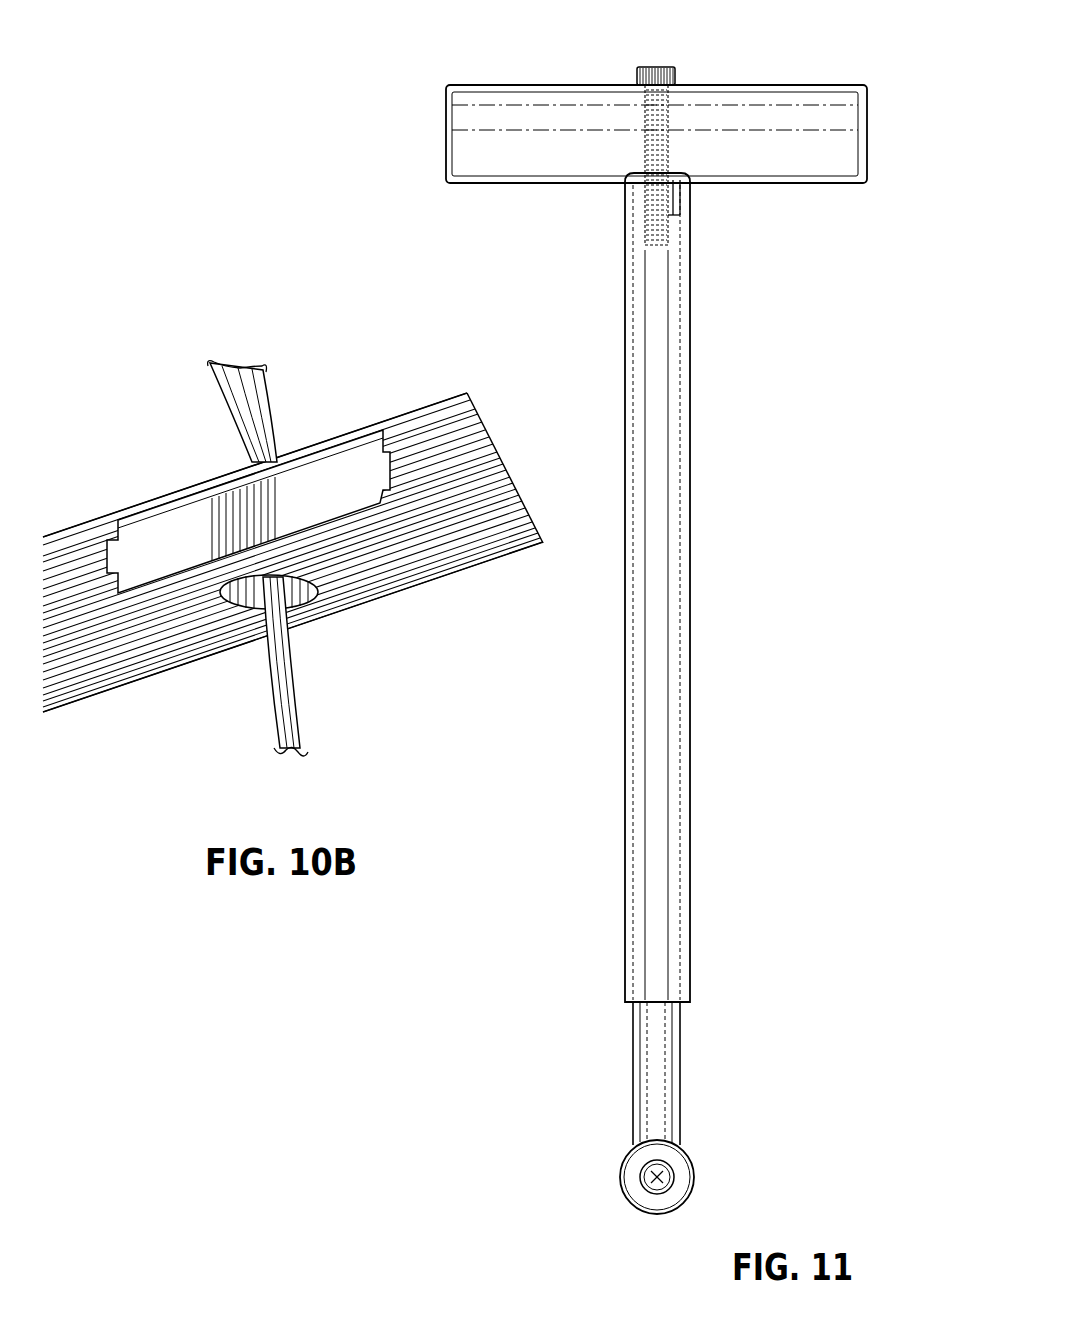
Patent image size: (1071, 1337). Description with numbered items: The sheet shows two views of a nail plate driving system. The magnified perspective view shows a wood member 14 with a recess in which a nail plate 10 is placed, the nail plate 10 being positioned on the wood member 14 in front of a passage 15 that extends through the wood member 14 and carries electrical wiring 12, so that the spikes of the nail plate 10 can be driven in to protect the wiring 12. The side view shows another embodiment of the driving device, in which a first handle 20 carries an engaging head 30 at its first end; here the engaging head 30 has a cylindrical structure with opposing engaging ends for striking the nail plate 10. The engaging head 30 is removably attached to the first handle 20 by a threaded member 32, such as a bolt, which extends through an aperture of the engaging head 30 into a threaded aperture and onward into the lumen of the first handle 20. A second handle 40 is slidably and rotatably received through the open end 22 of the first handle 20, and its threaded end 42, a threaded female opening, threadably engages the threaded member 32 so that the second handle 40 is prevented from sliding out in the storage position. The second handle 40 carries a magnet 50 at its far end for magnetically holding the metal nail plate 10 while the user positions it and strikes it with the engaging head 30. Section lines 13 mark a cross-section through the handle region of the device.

In FIG. 10B, the nail plate 10 is at (167, 518).
In FIG. 10B, the electrical wiring 12 is at (270, 403).
In FIG. 11, the electrical wiring 12 is at (622, 43).
In FIG. 11, the section line 13- 13 is at (612, 275).
In FIG. 10B, the wood member 14 is at (420, 583).
In FIG. 10B, the passage 15 is at (307, 600).
In FIG. 11, the first handle 20 is at (690, 557).
In FIG. 11, the open end 22 is at (686, 1007).
In FIG. 11, the engaging head 30 is at (888, 113).
In FIG. 11, the threaded member 32 is at (690, 200).
In FIG. 11, the second handle 40 is at (681, 1073).
In FIG. 11, the threaded end 42 is at (690, 215).
In FIG. 11, the magnet 50 is at (688, 1152).